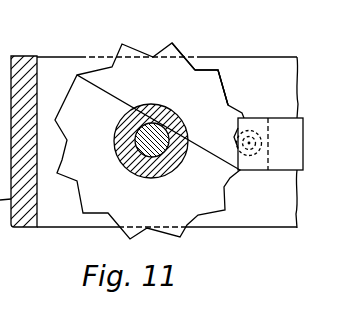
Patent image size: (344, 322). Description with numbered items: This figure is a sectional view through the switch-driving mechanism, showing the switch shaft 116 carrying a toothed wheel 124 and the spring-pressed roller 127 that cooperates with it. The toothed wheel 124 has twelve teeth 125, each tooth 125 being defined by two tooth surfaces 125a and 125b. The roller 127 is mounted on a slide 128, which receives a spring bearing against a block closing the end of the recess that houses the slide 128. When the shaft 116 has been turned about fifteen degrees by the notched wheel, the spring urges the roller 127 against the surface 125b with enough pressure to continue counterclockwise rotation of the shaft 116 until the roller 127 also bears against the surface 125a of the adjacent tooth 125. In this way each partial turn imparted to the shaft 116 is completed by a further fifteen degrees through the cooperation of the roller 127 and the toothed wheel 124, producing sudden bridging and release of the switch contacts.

The switch shaft 116 is at (163, 128).
The toothed wheel 124 is at (165, 82).
The tooth 125 is at (214, 69).
The tooth surface 125a is at (197, 68).
The tooth surface 125b is at (222, 87).
The spring-pressed roller 127 is at (251, 157).
The slide 128 is at (282, 171).